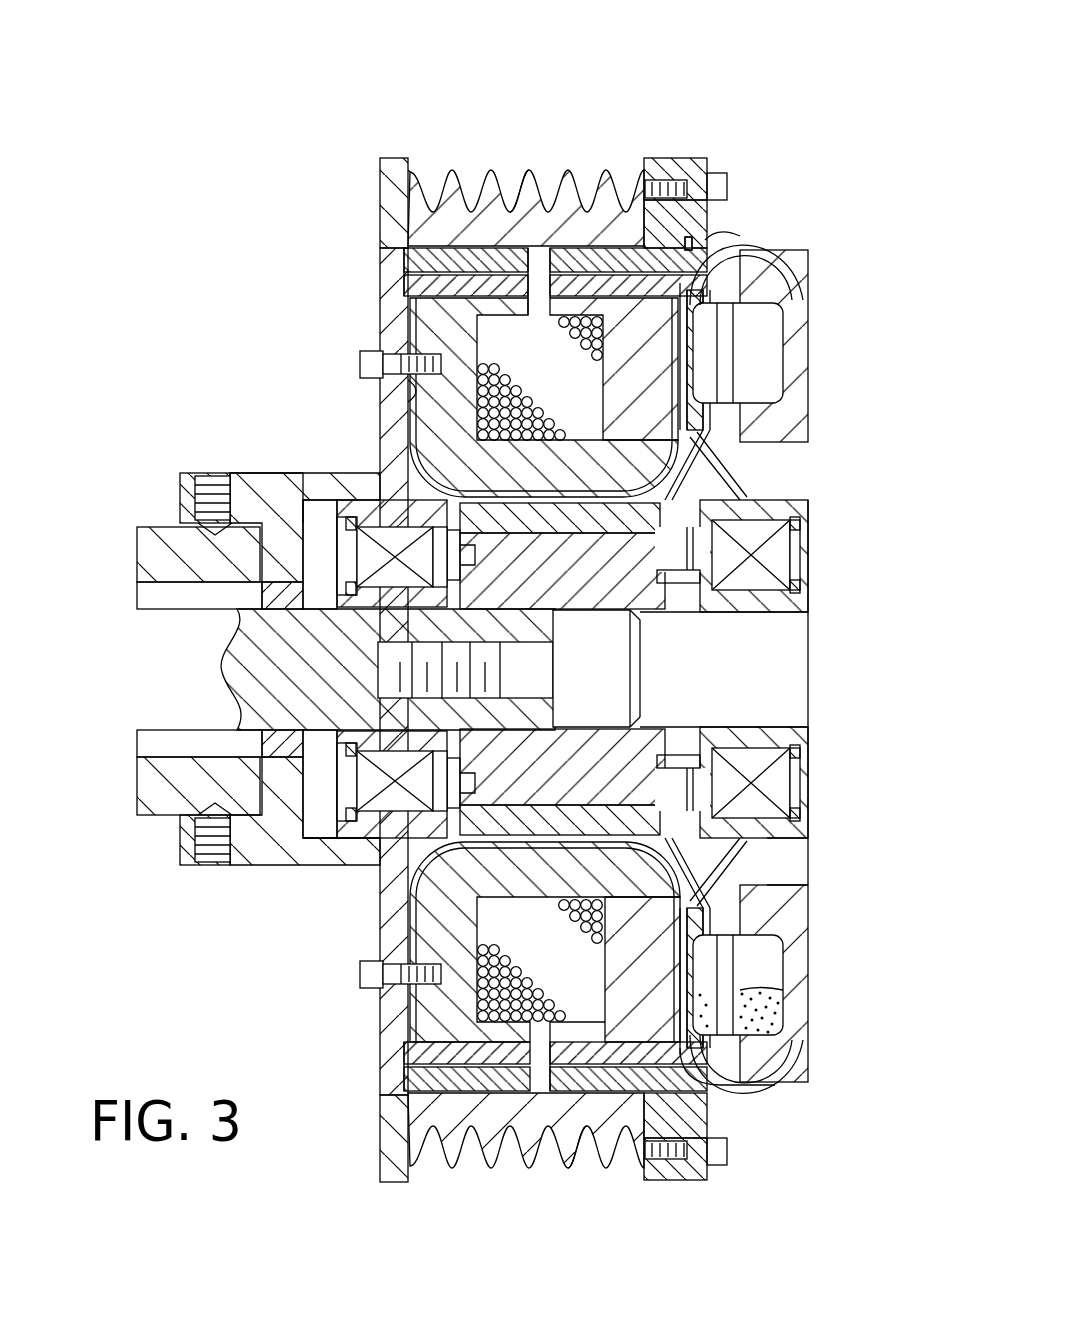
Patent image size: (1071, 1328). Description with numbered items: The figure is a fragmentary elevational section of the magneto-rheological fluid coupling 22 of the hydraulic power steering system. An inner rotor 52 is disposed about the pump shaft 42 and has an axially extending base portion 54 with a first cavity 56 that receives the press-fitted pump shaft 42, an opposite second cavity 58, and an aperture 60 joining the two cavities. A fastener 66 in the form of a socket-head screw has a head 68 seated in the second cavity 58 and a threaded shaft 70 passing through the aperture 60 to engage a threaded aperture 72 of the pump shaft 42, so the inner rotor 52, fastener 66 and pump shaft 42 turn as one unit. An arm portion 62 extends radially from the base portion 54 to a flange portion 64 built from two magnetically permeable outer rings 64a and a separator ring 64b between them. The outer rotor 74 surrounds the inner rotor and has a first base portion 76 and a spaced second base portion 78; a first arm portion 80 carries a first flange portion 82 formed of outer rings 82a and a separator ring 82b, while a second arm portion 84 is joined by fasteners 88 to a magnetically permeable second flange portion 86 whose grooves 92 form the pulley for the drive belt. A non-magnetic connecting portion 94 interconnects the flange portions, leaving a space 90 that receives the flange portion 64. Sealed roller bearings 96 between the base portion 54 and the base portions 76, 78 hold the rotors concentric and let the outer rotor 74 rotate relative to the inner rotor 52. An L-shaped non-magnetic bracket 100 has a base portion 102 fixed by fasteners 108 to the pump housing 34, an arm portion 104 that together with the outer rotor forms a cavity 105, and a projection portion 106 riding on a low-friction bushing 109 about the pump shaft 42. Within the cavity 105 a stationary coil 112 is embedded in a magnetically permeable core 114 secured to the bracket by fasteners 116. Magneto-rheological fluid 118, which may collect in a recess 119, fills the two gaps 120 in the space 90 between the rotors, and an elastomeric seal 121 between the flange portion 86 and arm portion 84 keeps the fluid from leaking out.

The magneto-rheological fluid coupling 22 is at (282, 108).
The pump housing 34 is at (155, 768).
The pump shaft 42 is at (272, 672).
The inner rotor 52 is at (720, 475).
The base portion 54 is at (673, 595).
The first cavity 56 is at (335, 560).
The second cavity 58 is at (765, 730).
The aperture 60 is at (497, 807).
The arm portion 62 is at (722, 435).
The flange portion 64 is at (728, 215).
The outer rings 64a is at (655, 250).
The separator ring 64b is at (530, 178).
The fastener 66 is at (640, 680).
The head 68 is at (600, 655).
The threaded shaft 70 is at (392, 660).
The threaded aperture 72 is at (335, 560).
The outer rotor 74 is at (765, 228).
The first base portion 76 is at (445, 497).
The second base portion 78 is at (752, 513).
The first arm portion 80 is at (705, 413).
The first flange portion 82 is at (400, 303).
The outer rings 82a is at (400, 275).
The separator ring 82b is at (540, 275).
The second arm portion 84 is at (778, 303).
The second flange portion 86 is at (412, 165).
The fasteners 88 is at (718, 190).
The space 90 is at (596, 250).
The grooves 92 is at (582, 1150).
The connecting portion 94 is at (390, 200).
The bearings 96 is at (400, 800).
The bracket 100 is at (378, 336).
The base portion 102 is at (285, 495).
The arm portion 104 is at (385, 1010).
The cavity 105 is at (412, 395).
The projection portion 106 is at (280, 555).
The fasteners 108 is at (205, 503).
The bushing 109 is at (262, 737).
The stationary coil 112 is at (535, 1010).
The magnetically permeable core 114 is at (650, 912).
The fasteners 116 is at (360, 362).
The magneto-rheological fluid 118 is at (760, 1010).
The recess 119 is at (768, 935).
The gaps 120 is at (750, 228).
The seal 121 is at (733, 215).